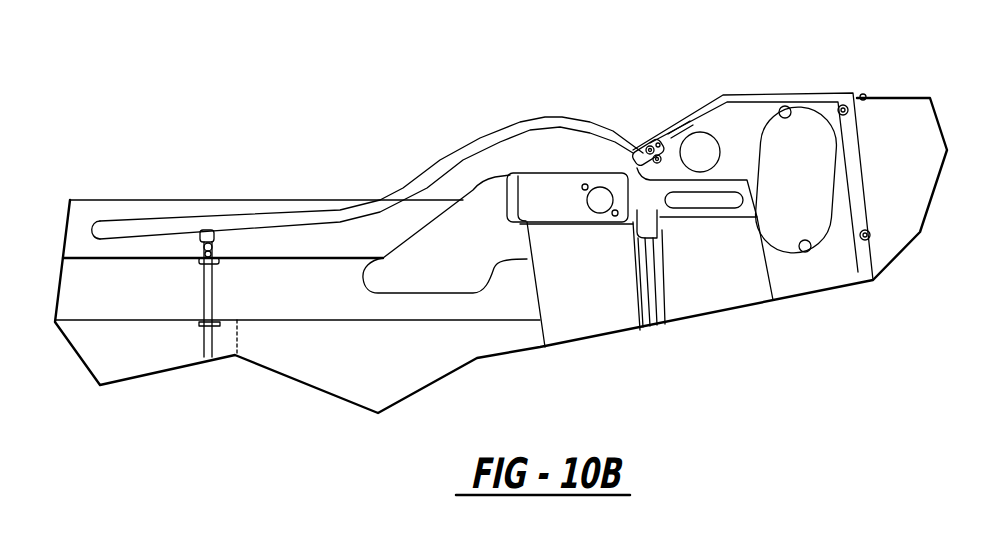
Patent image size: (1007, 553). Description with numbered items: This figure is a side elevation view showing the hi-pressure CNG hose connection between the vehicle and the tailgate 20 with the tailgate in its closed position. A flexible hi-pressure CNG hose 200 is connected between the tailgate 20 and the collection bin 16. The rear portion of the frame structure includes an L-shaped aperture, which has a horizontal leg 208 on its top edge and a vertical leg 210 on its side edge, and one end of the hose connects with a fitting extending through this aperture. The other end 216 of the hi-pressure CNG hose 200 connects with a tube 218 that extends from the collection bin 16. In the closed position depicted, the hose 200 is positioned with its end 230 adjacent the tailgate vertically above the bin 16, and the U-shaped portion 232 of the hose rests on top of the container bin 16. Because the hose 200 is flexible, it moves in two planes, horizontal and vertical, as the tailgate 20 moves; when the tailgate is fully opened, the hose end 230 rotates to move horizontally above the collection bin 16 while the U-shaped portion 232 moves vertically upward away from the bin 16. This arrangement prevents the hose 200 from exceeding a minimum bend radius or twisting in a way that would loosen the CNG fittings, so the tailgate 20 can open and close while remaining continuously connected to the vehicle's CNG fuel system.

The collection bin 16 is at (117, 350).
The tailgate 20 is at (778, 88).
The flexible hi-pressure CNG hose 200 is at (303, 183).
The horizontal leg 208 is at (647, 140).
The vertical leg 210 is at (640, 165).
The other end of the hi-pressure CNG hose 216 is at (205, 240).
The tube 218 is at (213, 288).
The hose end adjacent the tailgate 230 is at (557, 117).
The U-shaped portion 232 is at (113, 213).